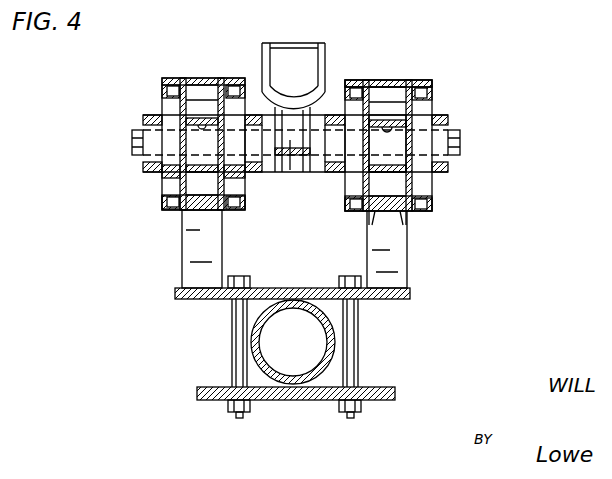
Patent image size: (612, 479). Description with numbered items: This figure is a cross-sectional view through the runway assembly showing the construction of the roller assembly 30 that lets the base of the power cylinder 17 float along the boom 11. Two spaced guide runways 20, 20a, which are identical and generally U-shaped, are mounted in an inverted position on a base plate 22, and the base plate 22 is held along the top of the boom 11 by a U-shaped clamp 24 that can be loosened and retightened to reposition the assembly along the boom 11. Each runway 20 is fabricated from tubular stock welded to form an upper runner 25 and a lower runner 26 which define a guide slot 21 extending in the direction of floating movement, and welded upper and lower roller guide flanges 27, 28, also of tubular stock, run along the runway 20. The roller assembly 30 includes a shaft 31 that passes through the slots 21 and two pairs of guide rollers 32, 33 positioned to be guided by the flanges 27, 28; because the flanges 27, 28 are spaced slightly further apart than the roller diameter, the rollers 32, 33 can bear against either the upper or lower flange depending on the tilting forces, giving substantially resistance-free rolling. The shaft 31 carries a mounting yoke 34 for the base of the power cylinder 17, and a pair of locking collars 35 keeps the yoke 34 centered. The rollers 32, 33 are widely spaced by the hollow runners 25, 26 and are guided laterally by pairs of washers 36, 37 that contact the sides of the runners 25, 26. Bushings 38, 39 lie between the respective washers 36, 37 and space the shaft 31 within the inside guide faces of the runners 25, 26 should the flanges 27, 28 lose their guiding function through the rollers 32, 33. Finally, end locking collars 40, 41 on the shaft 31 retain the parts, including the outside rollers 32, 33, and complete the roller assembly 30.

The boom 11 is at (336, 338).
The power cylinder 17 is at (320, 60).
The guide runway 20 is at (398, 270).
The guide runway 20a is at (186, 238).
The slot 21 is at (198, 78).
The base plate 22 is at (188, 299).
The U-shaped clamp 24 is at (310, 400).
The upper runner 25 is at (394, 80).
The lower runner 26 is at (376, 213).
The upper roller guide flange 27 is at (366, 92).
The lower roller guide flange 28 is at (352, 202).
The roller assembly 30 is at (132, 140).
The shaft 31 is at (291, 172).
The guide roller 32 is at (355, 88).
The guide roller 33 is at (168, 106).
The mounting yoke 34 is at (283, 58).
The locking collar 35 is at (253, 173).
The washer 36 is at (385, 135).
The washer 37 is at (195, 168).
The bushing 38 is at (402, 213).
The bushing 39 is at (206, 108).
The end locking collar 40 is at (460, 145).
The end locking collar 41 is at (150, 178).